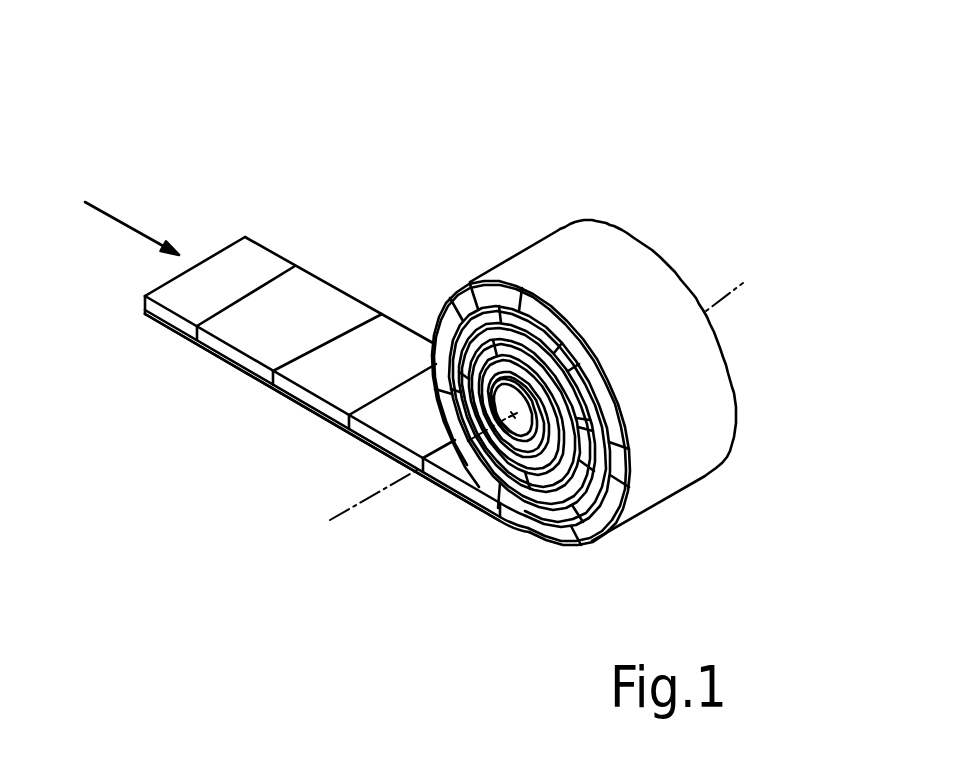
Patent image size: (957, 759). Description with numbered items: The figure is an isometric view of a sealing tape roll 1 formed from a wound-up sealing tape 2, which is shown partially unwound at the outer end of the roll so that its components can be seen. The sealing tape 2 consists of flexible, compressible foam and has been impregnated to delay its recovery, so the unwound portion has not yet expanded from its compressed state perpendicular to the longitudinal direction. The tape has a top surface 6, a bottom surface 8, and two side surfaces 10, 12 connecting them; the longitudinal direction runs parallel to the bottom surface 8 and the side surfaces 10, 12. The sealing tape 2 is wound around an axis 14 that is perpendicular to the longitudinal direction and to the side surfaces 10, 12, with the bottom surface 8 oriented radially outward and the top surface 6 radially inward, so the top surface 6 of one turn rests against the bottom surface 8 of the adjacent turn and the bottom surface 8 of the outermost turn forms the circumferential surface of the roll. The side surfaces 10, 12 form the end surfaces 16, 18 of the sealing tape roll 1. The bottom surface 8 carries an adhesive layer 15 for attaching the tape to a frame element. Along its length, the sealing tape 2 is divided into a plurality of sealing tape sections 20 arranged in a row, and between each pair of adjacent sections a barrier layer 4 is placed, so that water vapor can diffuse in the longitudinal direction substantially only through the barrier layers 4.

The sealing tape roll 1 is at (606, 98).
The sealing tape 2 is at (375, 247).
The barrier layers 4 is at (228, 308).
The top surface 6 is at (228, 268).
The bottom surface 8 is at (147, 319).
The side surface 10 is at (272, 253).
The side surface 12 is at (178, 325).
The axis 14 is at (390, 488).
The adhesive layer 15 is at (298, 408).
The end surface 16 is at (717, 337).
The end surface 18 is at (557, 500).
The sealing tape sections 20 is at (328, 310).